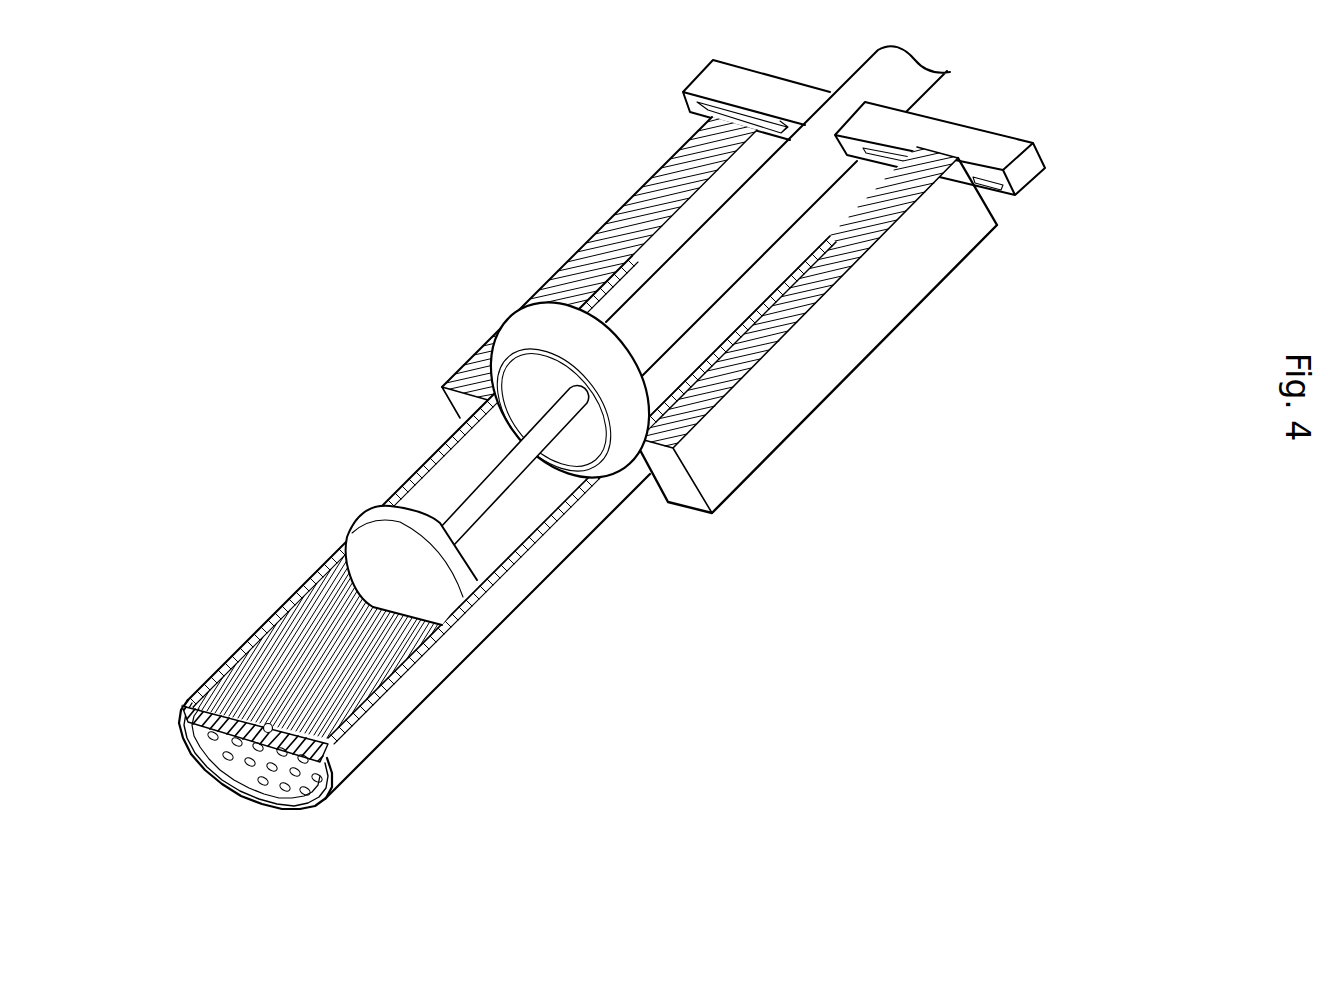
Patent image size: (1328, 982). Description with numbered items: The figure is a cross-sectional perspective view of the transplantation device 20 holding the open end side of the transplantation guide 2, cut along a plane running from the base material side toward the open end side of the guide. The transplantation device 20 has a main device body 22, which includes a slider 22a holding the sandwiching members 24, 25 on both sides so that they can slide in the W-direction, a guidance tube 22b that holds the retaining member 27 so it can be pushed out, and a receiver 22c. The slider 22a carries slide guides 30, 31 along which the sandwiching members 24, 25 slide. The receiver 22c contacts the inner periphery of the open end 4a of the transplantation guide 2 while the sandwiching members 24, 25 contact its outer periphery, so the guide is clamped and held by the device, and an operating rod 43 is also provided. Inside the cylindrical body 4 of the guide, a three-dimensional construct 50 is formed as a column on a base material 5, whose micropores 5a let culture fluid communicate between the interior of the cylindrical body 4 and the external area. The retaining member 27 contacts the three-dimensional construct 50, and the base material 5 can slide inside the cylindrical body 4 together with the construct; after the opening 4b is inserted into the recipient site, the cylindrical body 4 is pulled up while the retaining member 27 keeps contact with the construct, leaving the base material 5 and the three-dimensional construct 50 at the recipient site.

The transplantation guide 2 is at (488, 550).
The cylindrical body 4 is at (377, 737).
The open end 4a is at (673, 360).
The opening 4b is at (262, 800).
The base material 5 is at (185, 710).
The micropores 5a is at (228, 752).
The transplantation device 20 is at (783, 275).
The main device body 22 is at (905, 93).
The slider 22a is at (865, 207).
The guidance tube 22b is at (783, 208).
The receiver 22c is at (530, 330).
The sandwiching member 24 is at (719, 315).
The sandwiching member 25 is at (563, 260).
The retaining member 27 is at (370, 517).
The slide guide 30 is at (987, 190).
The slide guide 31 is at (788, 127).
The operating rod 43 is at (493, 495).
The three-dimensional construct 50 is at (383, 647).